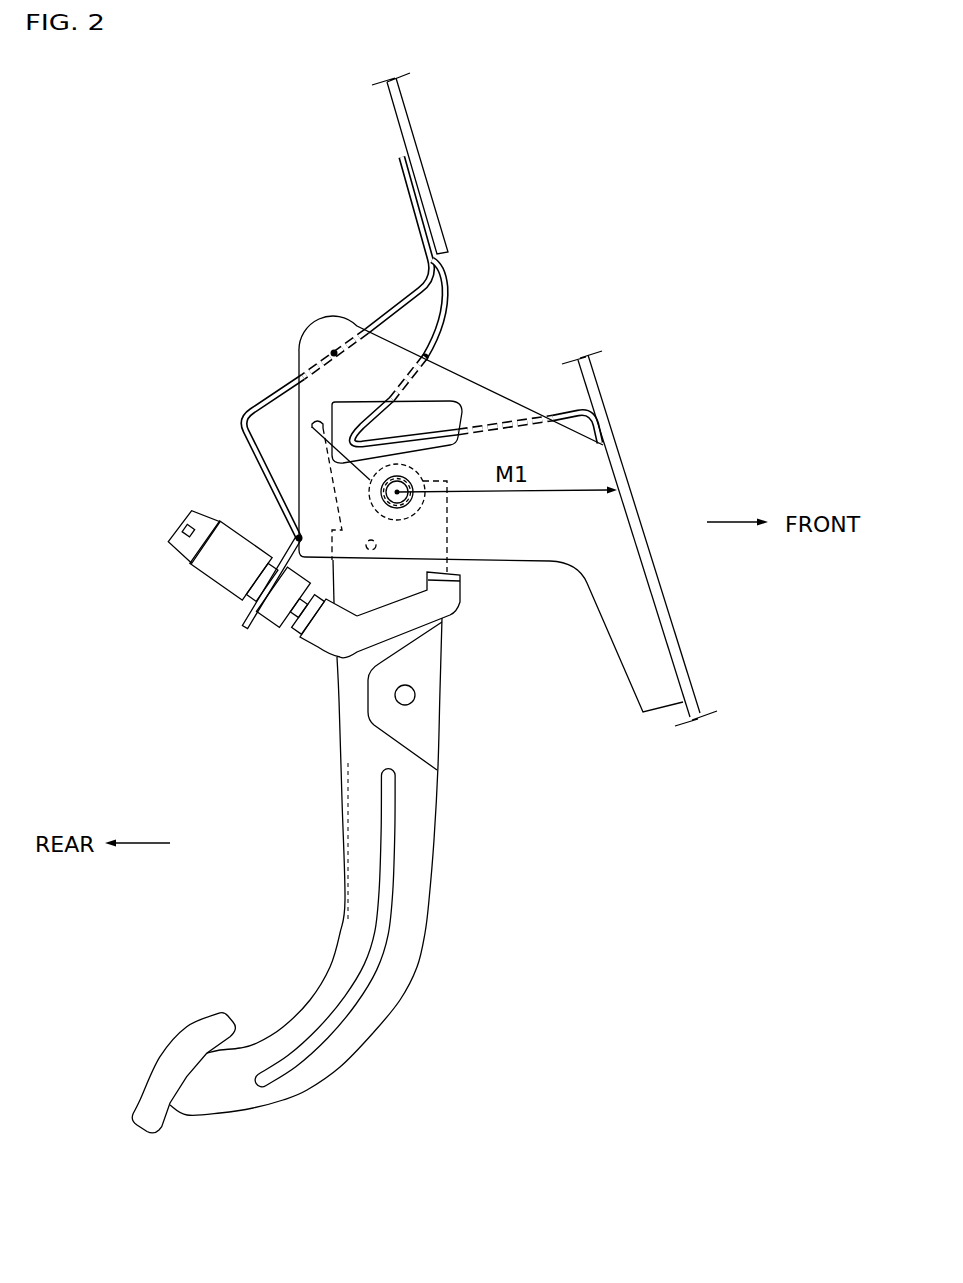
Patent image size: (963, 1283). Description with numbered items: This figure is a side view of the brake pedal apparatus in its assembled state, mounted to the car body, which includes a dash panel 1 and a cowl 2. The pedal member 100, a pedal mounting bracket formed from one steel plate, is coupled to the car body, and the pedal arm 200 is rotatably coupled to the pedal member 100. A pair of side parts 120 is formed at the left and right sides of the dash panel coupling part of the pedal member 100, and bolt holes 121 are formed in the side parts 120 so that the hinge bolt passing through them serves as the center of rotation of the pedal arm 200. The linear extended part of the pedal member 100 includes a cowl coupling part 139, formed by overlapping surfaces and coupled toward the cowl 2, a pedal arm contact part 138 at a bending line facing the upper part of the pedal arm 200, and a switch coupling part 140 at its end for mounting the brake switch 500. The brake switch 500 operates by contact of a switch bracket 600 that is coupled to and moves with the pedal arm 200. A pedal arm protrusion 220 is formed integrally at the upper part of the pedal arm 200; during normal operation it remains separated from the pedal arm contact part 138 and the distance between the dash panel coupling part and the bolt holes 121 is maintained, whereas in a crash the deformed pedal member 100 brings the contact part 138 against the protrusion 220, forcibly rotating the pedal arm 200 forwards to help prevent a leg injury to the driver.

The dash panel 1 is at (683, 669).
The cowl 2 is at (420, 151).
The pedal member 100 is at (480, 370).
The side parts 120 is at (520, 545).
The bolt holes 121 is at (383, 497).
The pedal arm contact part 138 is at (350, 444).
The cowl coupling part 139 is at (396, 187).
The switch coupling part 140 is at (229, 619).
The pedal arm 200 is at (431, 902).
The pedal arm protrusion 220 is at (312, 421).
The brake switch 500 is at (217, 575).
The switch bracket 600 is at (323, 642).